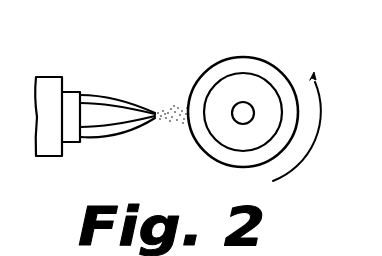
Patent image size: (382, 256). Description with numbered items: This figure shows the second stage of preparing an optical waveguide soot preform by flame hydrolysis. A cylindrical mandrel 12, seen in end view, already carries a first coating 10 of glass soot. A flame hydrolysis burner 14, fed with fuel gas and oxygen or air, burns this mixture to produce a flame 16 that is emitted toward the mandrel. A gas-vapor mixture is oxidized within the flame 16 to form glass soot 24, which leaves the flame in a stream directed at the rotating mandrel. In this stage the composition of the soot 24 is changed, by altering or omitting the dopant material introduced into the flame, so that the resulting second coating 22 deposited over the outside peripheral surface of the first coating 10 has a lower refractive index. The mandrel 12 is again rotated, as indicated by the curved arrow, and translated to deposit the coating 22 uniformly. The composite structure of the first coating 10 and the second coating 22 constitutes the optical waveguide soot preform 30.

The coating 10 is at (228, 90).
The cylindrical mandrel 12 is at (239, 114).
The flame hydrolysis burner 14 is at (50, 85).
The flame 16 is at (108, 110).
The coating 22 is at (244, 64).
The soot 24 is at (173, 111).
The optical waveguide soot preform 30 is at (274, 62).